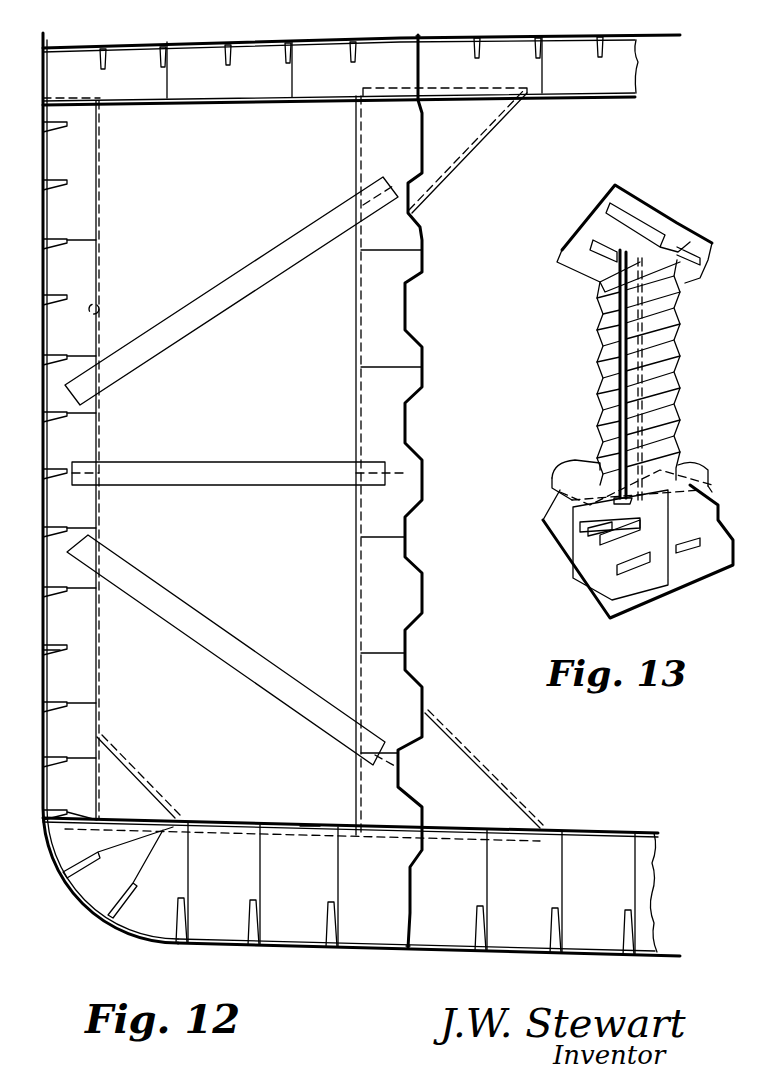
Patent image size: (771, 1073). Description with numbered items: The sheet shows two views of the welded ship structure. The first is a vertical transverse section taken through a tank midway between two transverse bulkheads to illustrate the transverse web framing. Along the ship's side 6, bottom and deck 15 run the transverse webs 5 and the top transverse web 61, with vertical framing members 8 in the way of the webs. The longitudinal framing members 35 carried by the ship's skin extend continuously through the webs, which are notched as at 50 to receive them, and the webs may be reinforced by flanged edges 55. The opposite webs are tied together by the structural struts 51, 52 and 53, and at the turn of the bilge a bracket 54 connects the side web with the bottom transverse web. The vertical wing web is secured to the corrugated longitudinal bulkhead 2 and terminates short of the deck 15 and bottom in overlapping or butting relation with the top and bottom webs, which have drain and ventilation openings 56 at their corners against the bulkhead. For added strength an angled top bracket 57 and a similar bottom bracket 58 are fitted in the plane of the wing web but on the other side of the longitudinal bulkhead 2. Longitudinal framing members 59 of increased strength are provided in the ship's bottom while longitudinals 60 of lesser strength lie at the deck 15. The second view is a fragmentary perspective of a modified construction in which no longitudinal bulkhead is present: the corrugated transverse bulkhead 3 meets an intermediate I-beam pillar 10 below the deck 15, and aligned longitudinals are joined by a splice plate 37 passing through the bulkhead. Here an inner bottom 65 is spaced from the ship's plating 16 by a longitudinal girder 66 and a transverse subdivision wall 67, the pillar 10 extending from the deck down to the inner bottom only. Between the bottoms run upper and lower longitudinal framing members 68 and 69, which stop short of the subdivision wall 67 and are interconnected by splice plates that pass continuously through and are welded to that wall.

In FIG. 12, the longitudinal bulkhead 2 is at (414, 278).
In FIG. 13, the transverse bulkhead 3 is at (675, 333).
In FIG. 12, the transverse web 5 is at (238, 832).
In FIG. 12, the side shell plating 6 is at (43, 262).
In FIG. 12, the vertical framing member 8 is at (88, 208).
In FIG. 13, the I-beam pillar 10 is at (620, 333).
In FIG. 12, the deck 15 is at (260, 42).
In FIG. 13, the deck 15 is at (563, 250).
In FIG. 12, the ship's plating 16 is at (306, 946).
In FIG. 13, the ship's plating 16 is at (568, 556).
In FIG. 12, the longitudinal framing member 35 is at (55, 298).
In FIG. 13, the splice plate 37 is at (665, 243).
In FIG. 12, the notch 50 is at (47, 651).
In FIG. 12, the structural strut 51 is at (212, 311).
In FIG. 12, the structural strut 52 is at (223, 462).
In FIG. 12, the structural strut 53 is at (193, 618).
In FIG. 12, the bracket 54 is at (130, 787).
In FIG. 12, the flanged edge 55 is at (100, 305).
In FIG. 12, the drain and ventilation opening 56 is at (416, 34).
In FIG. 12, the top bracket 57 is at (478, 132).
In FIG. 12, the bottom bracket 58 is at (493, 792).
In FIG. 12, the longitudinal framing member 59 is at (483, 925).
In FIG. 12, the longitudinal 60 is at (231, 52).
In FIG. 12, the top transverse web 61 is at (250, 95).
In FIG. 13, the inner bottom 65 is at (560, 478).
In FIG. 13, the longitudinal girder 66 is at (563, 533).
In FIG. 13, the transverse subdivision wall 67 is at (670, 573).
In FIG. 13, the upper longitudinal framing member 68 is at (617, 540).
In FIG. 13, the lower longitudinal framing member 69 is at (623, 577).